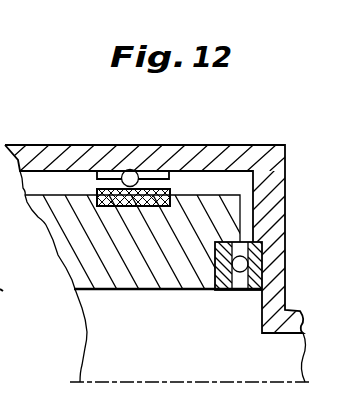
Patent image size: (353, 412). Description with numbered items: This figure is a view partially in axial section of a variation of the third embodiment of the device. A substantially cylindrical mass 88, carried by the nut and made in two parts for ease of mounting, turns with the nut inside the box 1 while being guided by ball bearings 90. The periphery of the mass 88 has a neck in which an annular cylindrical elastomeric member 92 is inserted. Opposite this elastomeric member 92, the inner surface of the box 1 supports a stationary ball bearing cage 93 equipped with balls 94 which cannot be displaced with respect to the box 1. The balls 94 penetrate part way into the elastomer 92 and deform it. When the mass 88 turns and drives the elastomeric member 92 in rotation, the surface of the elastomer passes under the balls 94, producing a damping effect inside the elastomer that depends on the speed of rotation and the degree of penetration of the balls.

The box 1 is at (242, 154).
The cylindrical mass 88 is at (74, 270).
The ball bearings 90 is at (262, 262).
The annular cylindrical elastomeric member 92 is at (113, 207).
The stationary ball bearing cage 93 is at (92, 171).
The balls 94 is at (134, 171).